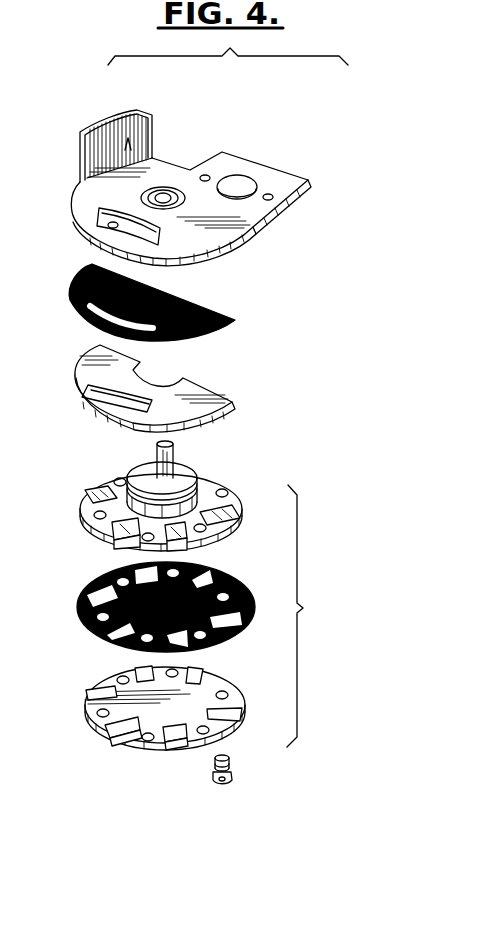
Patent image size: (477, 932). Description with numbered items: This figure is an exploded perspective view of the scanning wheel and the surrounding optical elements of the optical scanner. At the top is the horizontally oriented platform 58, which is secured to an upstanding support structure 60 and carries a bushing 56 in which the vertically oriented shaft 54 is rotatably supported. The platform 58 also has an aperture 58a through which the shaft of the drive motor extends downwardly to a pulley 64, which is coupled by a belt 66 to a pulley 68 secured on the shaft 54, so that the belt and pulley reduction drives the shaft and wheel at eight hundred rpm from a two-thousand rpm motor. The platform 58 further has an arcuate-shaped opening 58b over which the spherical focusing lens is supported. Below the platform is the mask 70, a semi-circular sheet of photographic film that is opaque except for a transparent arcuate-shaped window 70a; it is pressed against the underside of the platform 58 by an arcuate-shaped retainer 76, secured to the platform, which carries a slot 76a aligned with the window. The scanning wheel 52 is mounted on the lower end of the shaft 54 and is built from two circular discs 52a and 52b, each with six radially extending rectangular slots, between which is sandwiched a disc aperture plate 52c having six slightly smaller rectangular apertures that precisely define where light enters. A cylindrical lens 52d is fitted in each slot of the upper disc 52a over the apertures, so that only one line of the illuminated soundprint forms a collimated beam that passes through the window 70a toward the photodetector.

The scanning wheel 52 is at (171, 606).
The circular disc 52a is at (102, 533).
The circular disc 52b is at (83, 708).
The disc aperture plate 52c is at (80, 623).
The cylindrical lens 52d is at (95, 487).
The shaft 54 is at (168, 452).
The bushing 56 is at (163, 196).
The platform 58 is at (72, 207).
The aperture 58a is at (248, 178).
The arcuate-shaped opening 58b is at (118, 226).
The upstanding support structure 60 is at (107, 124).
The pulley 64 is at (10, 107).
The belt 66 is at (174, 60).
The pulley 68 is at (137, 502).
The mask 70 is at (75, 275).
The arcuate-shaped window 70a is at (82, 310).
The arcuate-shaped retainer 76 is at (77, 366).
The slot 76a is at (83, 398).